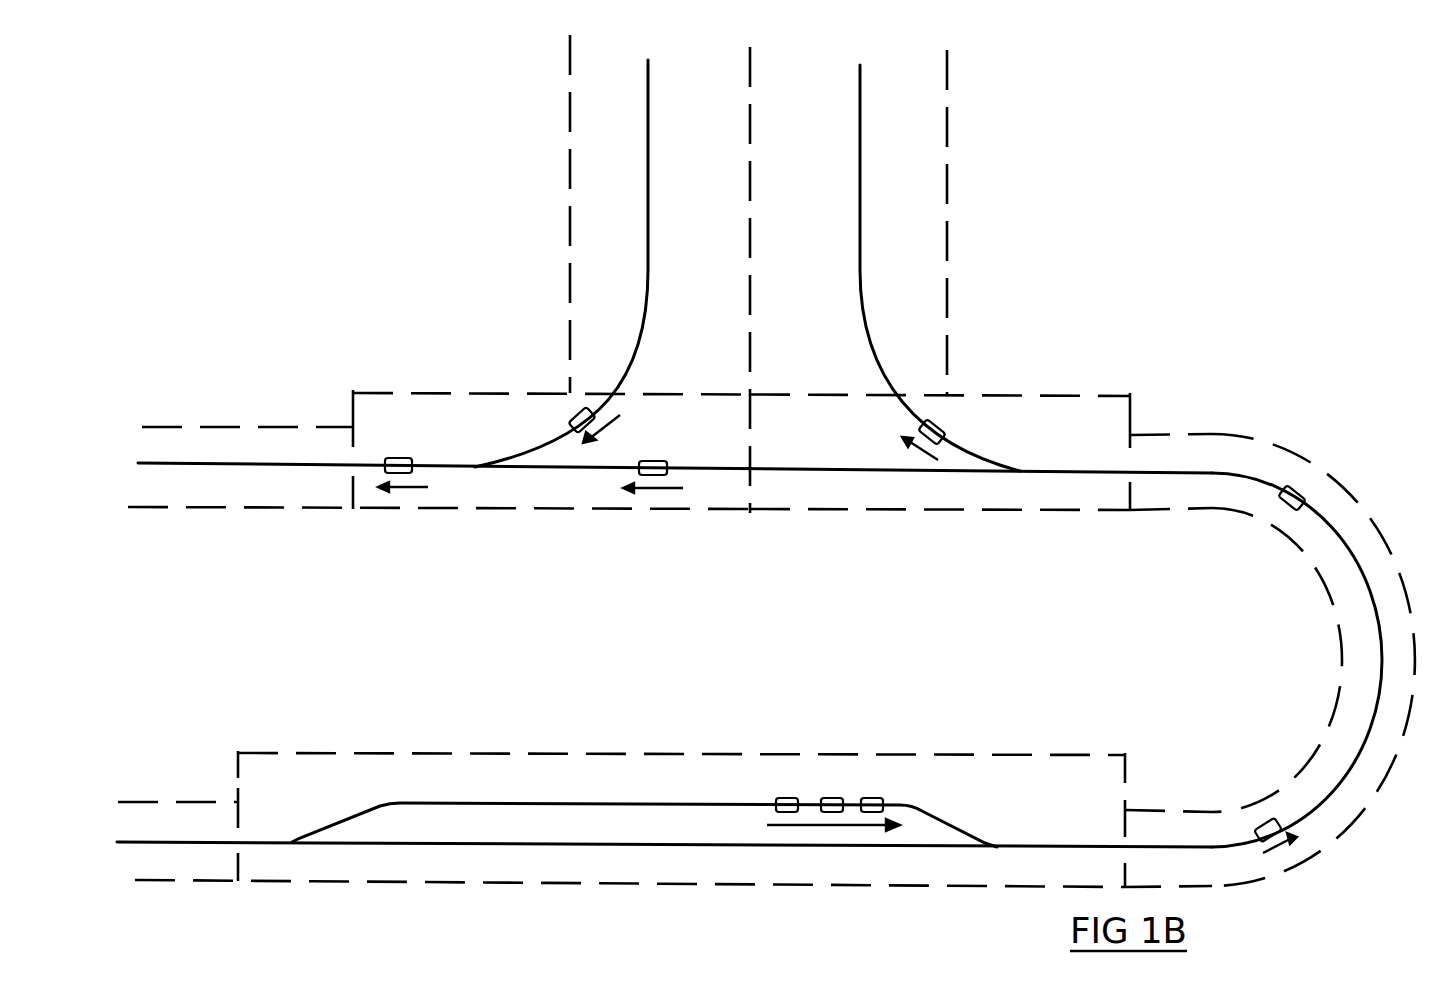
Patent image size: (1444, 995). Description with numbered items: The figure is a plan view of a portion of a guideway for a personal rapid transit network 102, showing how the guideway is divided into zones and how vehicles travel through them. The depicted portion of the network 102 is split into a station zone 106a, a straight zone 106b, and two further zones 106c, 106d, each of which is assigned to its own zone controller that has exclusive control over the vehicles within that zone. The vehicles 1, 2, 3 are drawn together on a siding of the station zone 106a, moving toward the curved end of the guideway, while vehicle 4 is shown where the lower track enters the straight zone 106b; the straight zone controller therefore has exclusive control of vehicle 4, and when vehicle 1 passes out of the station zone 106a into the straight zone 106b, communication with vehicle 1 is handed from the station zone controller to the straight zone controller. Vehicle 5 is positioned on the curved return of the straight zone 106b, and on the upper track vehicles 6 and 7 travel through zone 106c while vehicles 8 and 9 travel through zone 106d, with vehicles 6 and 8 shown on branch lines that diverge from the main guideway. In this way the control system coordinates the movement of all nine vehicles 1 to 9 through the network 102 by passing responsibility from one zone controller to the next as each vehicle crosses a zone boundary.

The network 102 is at (1038, 221).
The station zone 106a is at (630, 757).
The straight zone 106b is at (1327, 603).
The zone 106c is at (940, 510).
The zone 106d is at (522, 510).
The vehicle 1 is at (787, 793).
The vehicle 2 is at (832, 793).
The vehicle 3 is at (872, 793).
The vehicle 4 is at (1268, 820).
The vehicle 5 is at (1292, 490).
The vehicle 6 is at (937, 427).
The vehicle 7 is at (653, 456).
The vehicle 8 is at (573, 420).
The vehicle 9 is at (398, 453).